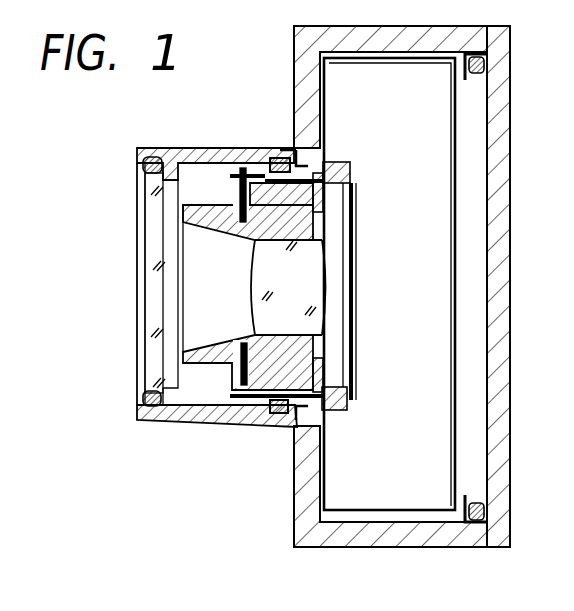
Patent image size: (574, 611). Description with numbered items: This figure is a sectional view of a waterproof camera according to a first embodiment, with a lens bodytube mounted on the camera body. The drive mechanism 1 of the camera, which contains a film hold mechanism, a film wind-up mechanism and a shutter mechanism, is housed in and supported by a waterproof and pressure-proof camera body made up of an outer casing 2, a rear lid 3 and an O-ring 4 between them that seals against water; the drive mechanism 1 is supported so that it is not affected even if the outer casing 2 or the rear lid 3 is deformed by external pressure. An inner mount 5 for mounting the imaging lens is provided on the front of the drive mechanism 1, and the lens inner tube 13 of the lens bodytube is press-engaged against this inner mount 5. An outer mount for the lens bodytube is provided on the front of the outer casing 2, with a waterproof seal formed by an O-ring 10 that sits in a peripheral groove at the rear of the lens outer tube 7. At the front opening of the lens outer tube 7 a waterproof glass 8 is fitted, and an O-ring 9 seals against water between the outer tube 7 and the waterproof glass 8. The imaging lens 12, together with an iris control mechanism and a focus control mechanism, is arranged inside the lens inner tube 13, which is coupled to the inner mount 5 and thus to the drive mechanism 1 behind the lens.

The drive mechanism 1 is at (333, 487).
The outer casing 2 is at (303, 532).
The rear lid 3 is at (497, 525).
The O-ring 4 is at (477, 524).
The inner mount 5 is at (330, 413).
The lens outer tube 7 is at (183, 412).
The waterproof glass 8 is at (153, 293).
The O-ring 9 is at (153, 156).
The O-ring 10 is at (277, 156).
The imaging lens 12 is at (253, 277).
The lens inner tube 13 is at (250, 165).